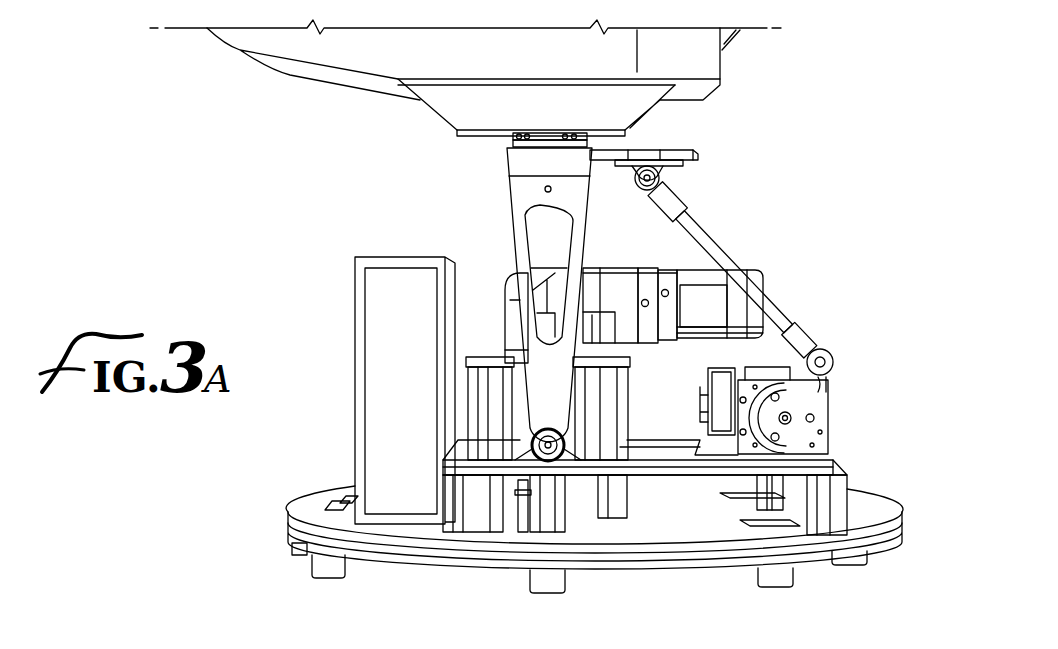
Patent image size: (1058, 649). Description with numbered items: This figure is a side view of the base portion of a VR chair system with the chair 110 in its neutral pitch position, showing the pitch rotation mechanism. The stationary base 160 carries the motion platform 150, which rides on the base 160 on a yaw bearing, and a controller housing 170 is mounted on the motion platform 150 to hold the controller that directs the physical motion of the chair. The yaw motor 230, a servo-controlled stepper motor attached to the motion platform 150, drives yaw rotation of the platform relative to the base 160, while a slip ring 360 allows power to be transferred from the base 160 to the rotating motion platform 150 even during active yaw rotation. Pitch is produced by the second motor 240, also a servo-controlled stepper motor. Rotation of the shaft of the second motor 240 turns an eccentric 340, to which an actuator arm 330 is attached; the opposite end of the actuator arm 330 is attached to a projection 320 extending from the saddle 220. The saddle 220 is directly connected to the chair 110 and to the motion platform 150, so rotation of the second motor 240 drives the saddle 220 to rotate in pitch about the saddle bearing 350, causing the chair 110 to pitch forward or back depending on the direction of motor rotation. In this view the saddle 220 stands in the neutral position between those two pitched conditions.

The chair 110 is at (695, 58).
The motion platform 150 is at (310, 513).
The base 160 is at (290, 540).
The controller housing 170 is at (355, 296).
The saddle 220 is at (524, 192).
The yaw motor 230 is at (753, 272).
The second motor 240 is at (777, 367).
The projection 320 is at (692, 148).
The actuator arm 330 is at (690, 224).
The eccentric 340 is at (823, 385).
The saddle bearing 350 is at (552, 452).
The slip ring 360 is at (523, 508).